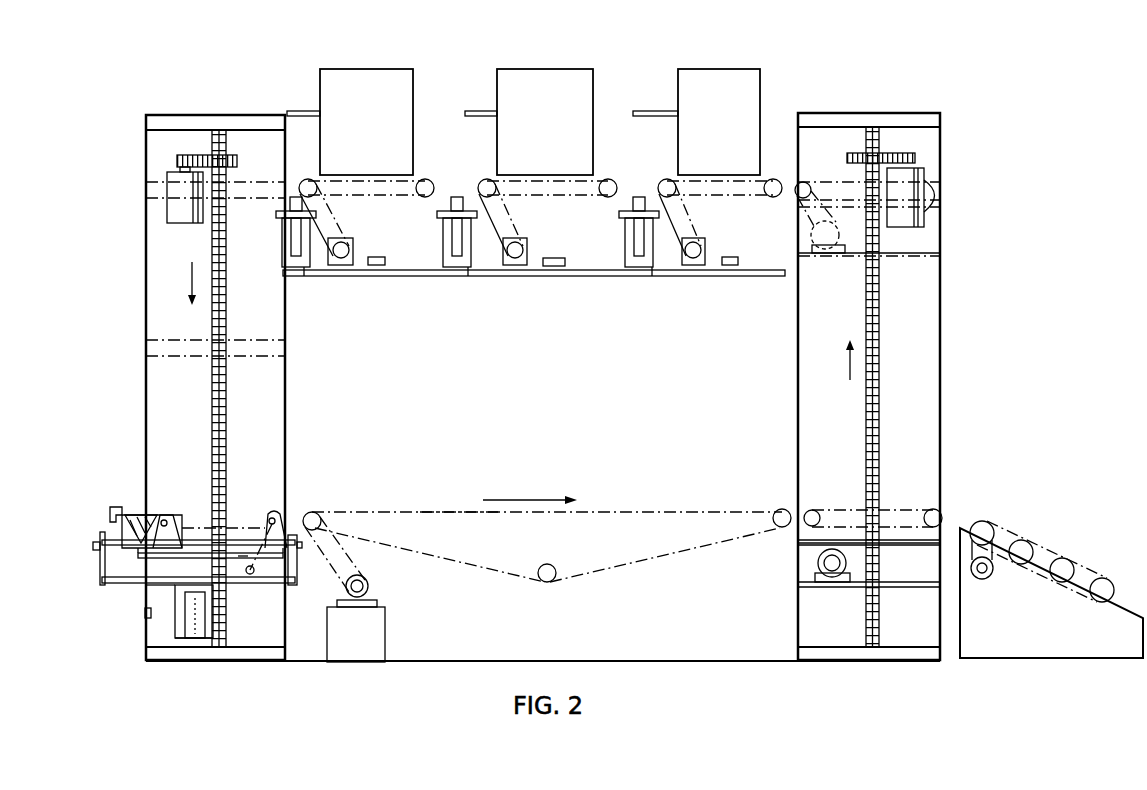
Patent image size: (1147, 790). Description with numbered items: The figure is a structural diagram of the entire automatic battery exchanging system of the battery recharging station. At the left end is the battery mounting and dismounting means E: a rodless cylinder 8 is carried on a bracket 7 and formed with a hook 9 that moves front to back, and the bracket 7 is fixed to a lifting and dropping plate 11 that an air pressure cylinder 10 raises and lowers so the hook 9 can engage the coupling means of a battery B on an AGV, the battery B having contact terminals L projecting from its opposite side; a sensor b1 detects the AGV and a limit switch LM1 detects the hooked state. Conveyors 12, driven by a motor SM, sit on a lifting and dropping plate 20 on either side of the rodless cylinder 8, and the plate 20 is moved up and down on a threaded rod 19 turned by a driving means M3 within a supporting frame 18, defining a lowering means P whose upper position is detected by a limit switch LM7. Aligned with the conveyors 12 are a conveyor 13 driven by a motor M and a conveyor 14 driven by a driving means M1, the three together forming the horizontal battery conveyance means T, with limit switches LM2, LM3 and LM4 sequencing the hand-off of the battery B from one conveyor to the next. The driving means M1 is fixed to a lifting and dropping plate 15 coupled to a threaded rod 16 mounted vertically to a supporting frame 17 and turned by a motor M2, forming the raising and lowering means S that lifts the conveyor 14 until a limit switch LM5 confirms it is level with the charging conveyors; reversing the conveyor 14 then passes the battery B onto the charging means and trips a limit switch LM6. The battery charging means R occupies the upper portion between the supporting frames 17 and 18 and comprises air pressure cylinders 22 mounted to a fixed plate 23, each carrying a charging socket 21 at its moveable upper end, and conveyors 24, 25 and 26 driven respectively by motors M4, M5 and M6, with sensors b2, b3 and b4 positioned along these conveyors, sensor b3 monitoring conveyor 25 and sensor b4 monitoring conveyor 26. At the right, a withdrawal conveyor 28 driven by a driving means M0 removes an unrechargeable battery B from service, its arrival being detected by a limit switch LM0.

The bracket 7 is at (100, 550).
The rodless cylinder 8 is at (243, 556).
The hook 9 is at (126, 510).
The air pressure cylinder 10 is at (183, 640).
The lifting and dropping plate 11 is at (172, 580).
The conveyors 12 is at (245, 508).
The conveyor 13 is at (452, 510).
The conveyor 14 is at (850, 500).
The lifting and dropping plate 15 is at (895, 580).
The threaded rod 16 is at (880, 408).
The supporting frame 17 is at (942, 320).
The supporting frame 18 is at (146, 303).
The threaded rod 19 is at (212, 379).
The lifting and dropping plate 20 is at (145, 562).
The charging socket 21 is at (298, 197).
The air pressure cylinders 22 is at (304, 278).
The fixed plate 23 is at (605, 278).
The conveyor 24 is at (712, 185).
The conveyor 25 is at (542, 185).
The conveyor 26 is at (362, 185).
The withdrawal conveyor 28 is at (1068, 565).
The battery B is at (373, 113).
The contact terminals L is at (297, 111).
The battery charging means R is at (684, 62).
The raising and lowering means S is at (1000, 243).
The lowering means P is at (132, 218).
The battery mounting and dismounting means E is at (80, 521).
The horizontal battery conveyance means T is at (610, 508).
The driving means M is at (360, 610).
The driving means M0 is at (993, 591).
The driving means M1 is at (825, 256).
The driving means M2 is at (924, 172).
The driving means M3 is at (185, 218).
The driving means M4 is at (700, 268).
The driving means M5 is at (527, 268).
The driving means M6 is at (350, 268).
The limit switch LM0 is at (1110, 612).
The limit switch LM1 is at (155, 510).
The limit switch LM2 is at (290, 507).
The limit switch LM3 is at (812, 507).
The limit switch LM4 is at (936, 507).
The limit switch LM5 is at (927, 152).
The limit switch LM6 is at (790, 178).
The limit switch LM7 is at (158, 162).
The driving means SM is at (268, 572).
The sensor b1 is at (145, 612).
The sensor b2 is at (730, 257).
The sensor b3 is at (553, 258).
The sensor b4 is at (375, 257).